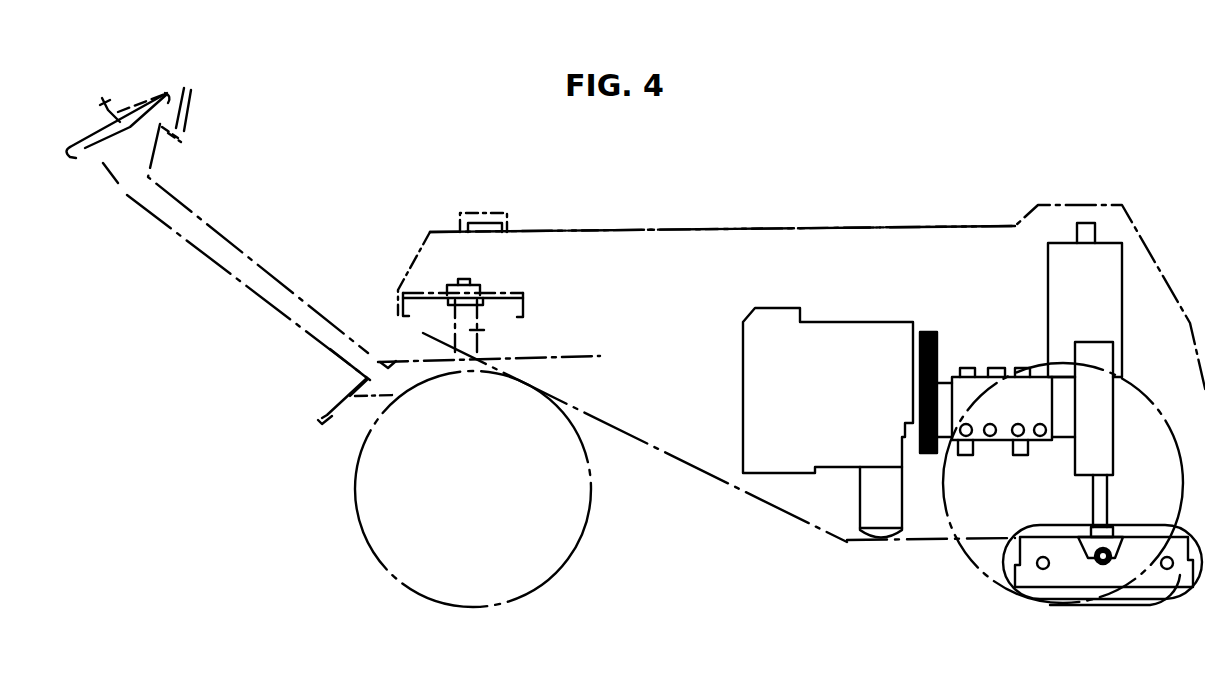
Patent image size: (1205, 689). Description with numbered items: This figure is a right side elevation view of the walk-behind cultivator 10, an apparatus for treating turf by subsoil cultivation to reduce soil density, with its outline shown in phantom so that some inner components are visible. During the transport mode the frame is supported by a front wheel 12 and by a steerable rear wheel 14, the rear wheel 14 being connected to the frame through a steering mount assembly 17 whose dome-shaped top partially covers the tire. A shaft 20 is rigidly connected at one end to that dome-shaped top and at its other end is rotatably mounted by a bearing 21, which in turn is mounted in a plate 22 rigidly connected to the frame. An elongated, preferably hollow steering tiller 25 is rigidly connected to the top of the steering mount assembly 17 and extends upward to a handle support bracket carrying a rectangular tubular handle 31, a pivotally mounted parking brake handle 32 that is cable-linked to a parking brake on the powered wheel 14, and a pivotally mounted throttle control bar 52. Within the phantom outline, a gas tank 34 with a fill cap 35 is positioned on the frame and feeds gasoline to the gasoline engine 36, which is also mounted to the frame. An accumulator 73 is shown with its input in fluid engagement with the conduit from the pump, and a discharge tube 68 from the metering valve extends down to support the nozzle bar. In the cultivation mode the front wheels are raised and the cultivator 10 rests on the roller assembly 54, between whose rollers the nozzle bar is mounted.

The cultivator 10 is at (870, 166).
The front wheel 12 is at (1010, 585).
The steerable rear wheel 14 is at (558, 573).
The steering mount assembly 17 is at (420, 351).
The shaft 20 is at (487, 339).
The bearing 21 is at (478, 284).
The plate 22 is at (527, 296).
The steering tiller 25 is at (231, 273).
The rectangular handle 31 is at (84, 168).
The parking brake handle 32 is at (190, 88).
The gas tank 34 is at (630, 228).
The fill cap 35 is at (494, 213).
The gasoline engine 36 is at (845, 409).
The throttle control bar 52 is at (107, 98).
The roller assembly 54 is at (1080, 524).
The discharge tube 68 is at (1100, 507).
The accumulator 73 is at (1058, 288).